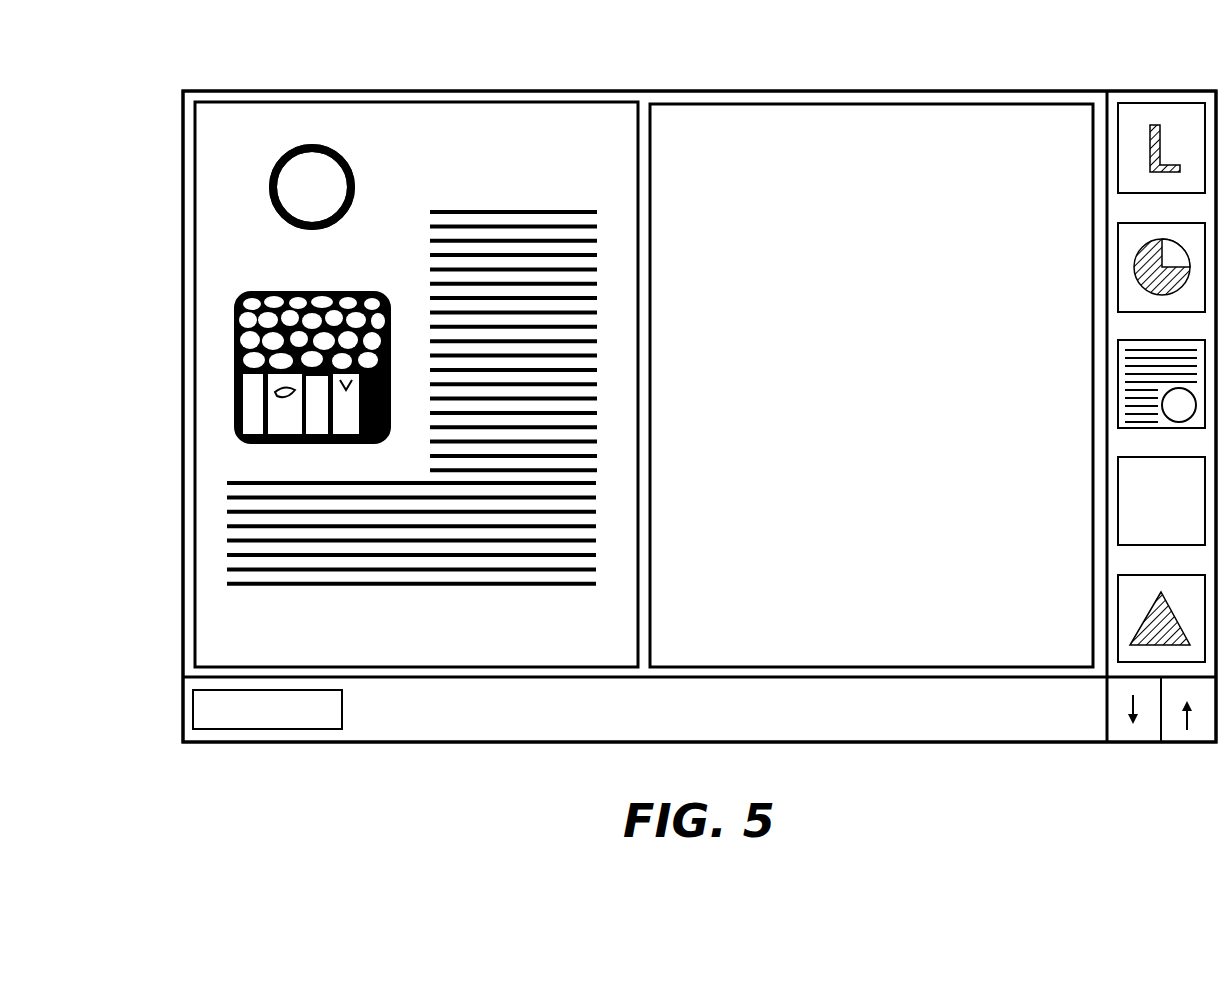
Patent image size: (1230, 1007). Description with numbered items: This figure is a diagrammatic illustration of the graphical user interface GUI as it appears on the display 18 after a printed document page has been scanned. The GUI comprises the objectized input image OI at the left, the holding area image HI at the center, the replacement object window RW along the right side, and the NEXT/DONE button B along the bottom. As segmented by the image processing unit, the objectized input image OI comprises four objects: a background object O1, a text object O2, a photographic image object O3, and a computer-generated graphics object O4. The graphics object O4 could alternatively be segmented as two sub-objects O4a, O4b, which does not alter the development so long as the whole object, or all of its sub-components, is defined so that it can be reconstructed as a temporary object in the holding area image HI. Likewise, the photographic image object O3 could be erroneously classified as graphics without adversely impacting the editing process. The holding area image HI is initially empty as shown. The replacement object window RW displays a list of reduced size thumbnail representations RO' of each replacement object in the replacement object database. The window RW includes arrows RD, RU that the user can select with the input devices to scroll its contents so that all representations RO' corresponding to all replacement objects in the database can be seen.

The display 18 is at (226, 90).
The graphical user interface GUI is at (658, 68).
The objectized input image OI is at (384, 124).
The background object O1 is at (513, 306).
The text object O2 is at (431, 591).
The photographic image object O3 is at (366, 283).
The computer-generated graphics object O4 is at (266, 229).
The graphics sub-object O4a is at (300, 172).
The graphics sub-object O4b is at (353, 174).
The holding area image HI is at (896, 134).
The replacement object window RW is at (1142, 100).
The replacement object representation RO' is at (1101, 385).
The scroll down arrow RD is at (1125, 744).
The scroll up arrow RU is at (1200, 744).
The NEXT/DONE button B is at (342, 713).